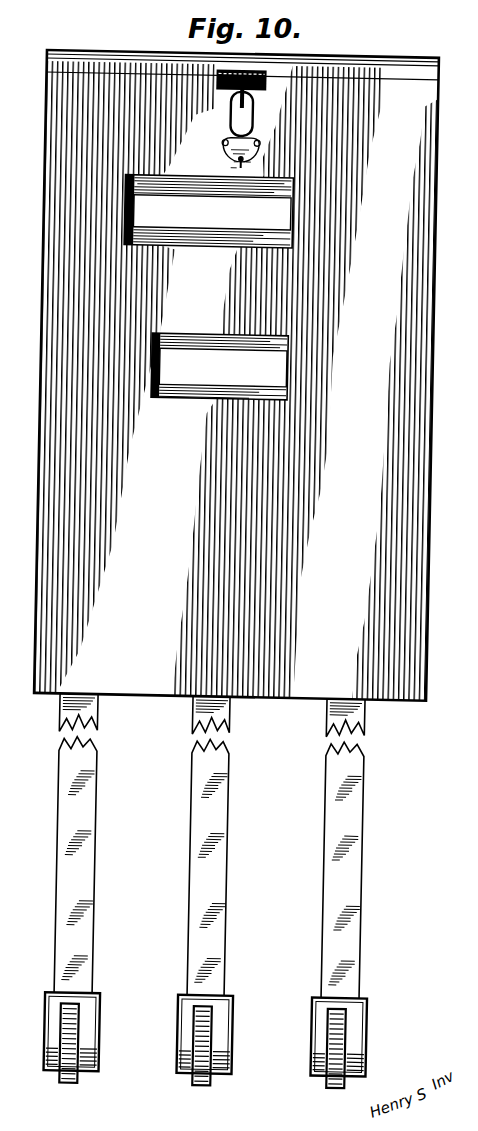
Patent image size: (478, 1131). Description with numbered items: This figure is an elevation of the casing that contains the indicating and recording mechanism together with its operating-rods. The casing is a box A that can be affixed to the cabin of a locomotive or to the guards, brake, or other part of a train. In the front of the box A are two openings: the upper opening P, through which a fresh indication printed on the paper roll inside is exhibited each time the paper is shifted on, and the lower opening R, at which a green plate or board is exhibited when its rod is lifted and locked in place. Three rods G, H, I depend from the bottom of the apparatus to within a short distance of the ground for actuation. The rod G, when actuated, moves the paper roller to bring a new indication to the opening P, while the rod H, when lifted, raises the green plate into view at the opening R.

The box or casing A is at (54, 143).
The opening P is at (208, 211).
The opening R is at (219, 366).
The rod G is at (118, 880).
The rod H is at (242, 885).
The rod I is at (378, 885).